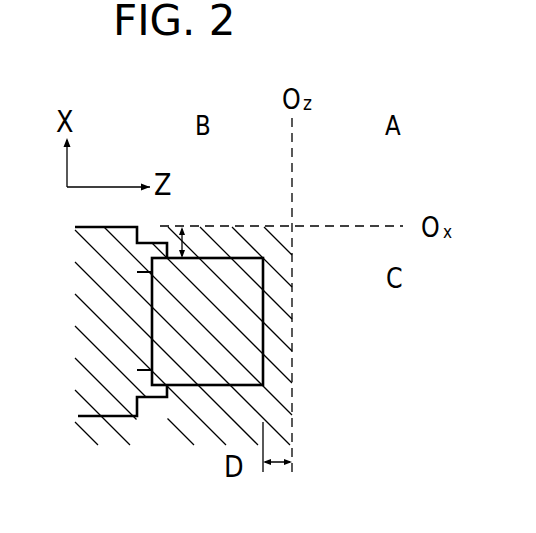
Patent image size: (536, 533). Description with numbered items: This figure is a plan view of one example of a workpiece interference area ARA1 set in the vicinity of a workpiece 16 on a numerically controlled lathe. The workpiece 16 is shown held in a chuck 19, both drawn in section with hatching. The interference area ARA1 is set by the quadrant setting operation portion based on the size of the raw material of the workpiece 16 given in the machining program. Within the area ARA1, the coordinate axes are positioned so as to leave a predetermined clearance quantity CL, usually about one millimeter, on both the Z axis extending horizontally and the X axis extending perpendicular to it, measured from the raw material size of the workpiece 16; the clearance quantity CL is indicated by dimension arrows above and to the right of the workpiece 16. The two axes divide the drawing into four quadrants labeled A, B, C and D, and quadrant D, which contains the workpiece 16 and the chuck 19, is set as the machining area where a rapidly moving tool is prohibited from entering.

The workpiece 16 is at (223, 387).
The chuck 19 is at (147, 398).
The workpiece interference area ARA1 is at (283, 80).
The clearance quantity CL is at (235, 365).